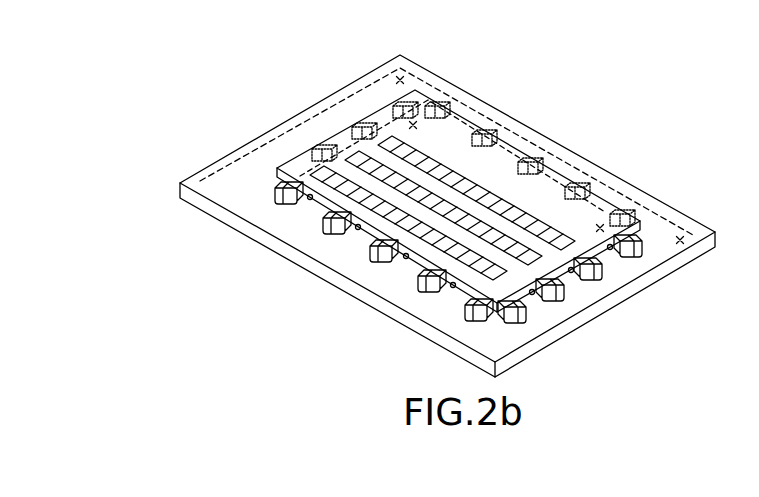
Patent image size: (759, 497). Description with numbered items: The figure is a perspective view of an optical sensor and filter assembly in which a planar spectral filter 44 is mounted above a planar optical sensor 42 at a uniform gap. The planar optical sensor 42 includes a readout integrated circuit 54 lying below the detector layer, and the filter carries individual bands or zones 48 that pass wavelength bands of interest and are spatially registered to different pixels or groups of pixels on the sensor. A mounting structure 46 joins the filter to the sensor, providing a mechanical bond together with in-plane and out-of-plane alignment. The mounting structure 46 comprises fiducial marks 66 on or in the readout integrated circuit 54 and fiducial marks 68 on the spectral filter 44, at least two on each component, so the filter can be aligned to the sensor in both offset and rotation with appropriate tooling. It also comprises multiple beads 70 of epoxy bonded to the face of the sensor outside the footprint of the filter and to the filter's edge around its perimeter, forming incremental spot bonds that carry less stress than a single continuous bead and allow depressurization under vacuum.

The planar optical sensor 42 is at (205, 126).
The planar spectral filter 44 is at (333, 140).
The mounting structure 46 is at (657, 220).
The zones 48 is at (377, 212).
The readout integrated circuit 54 is at (627, 298).
The fiducial marks 66 is at (687, 234).
The fiducial marks 68 is at (414, 126).
The beads 70 is at (421, 278).